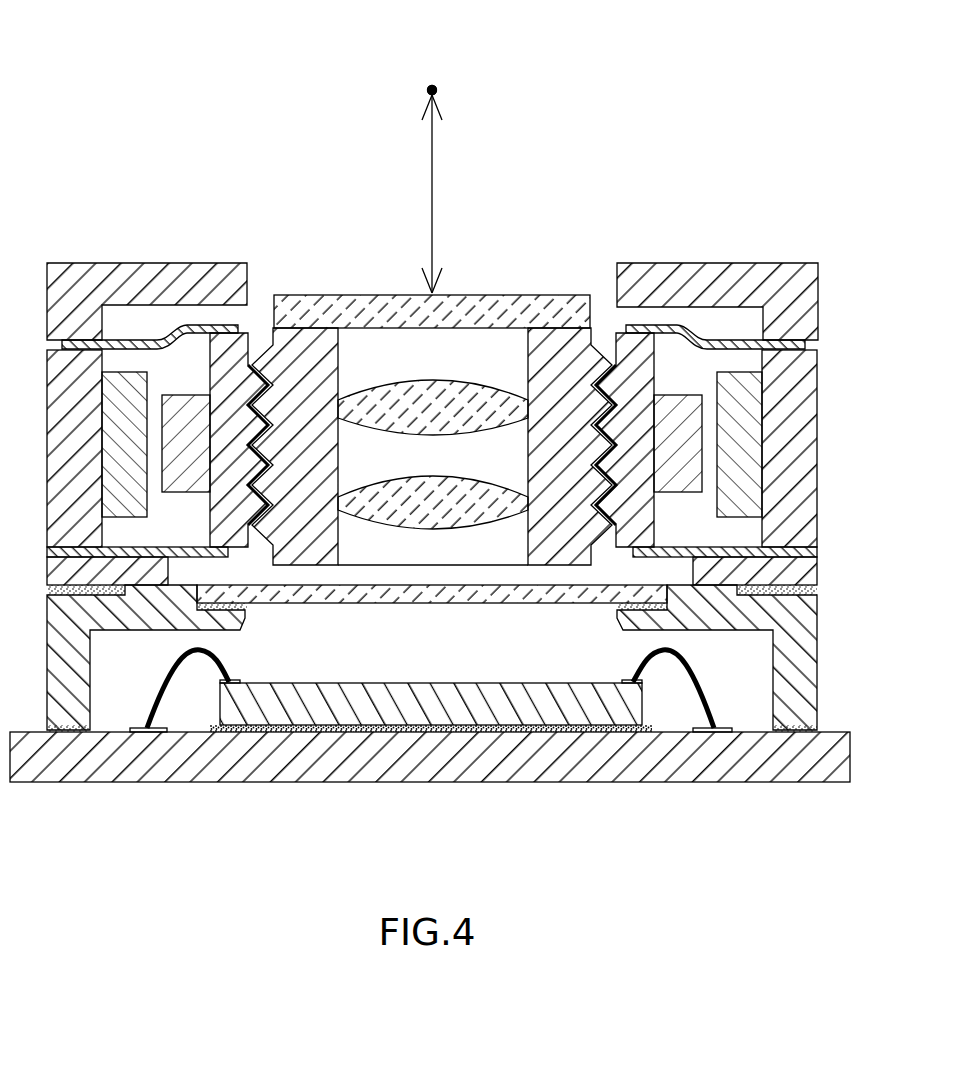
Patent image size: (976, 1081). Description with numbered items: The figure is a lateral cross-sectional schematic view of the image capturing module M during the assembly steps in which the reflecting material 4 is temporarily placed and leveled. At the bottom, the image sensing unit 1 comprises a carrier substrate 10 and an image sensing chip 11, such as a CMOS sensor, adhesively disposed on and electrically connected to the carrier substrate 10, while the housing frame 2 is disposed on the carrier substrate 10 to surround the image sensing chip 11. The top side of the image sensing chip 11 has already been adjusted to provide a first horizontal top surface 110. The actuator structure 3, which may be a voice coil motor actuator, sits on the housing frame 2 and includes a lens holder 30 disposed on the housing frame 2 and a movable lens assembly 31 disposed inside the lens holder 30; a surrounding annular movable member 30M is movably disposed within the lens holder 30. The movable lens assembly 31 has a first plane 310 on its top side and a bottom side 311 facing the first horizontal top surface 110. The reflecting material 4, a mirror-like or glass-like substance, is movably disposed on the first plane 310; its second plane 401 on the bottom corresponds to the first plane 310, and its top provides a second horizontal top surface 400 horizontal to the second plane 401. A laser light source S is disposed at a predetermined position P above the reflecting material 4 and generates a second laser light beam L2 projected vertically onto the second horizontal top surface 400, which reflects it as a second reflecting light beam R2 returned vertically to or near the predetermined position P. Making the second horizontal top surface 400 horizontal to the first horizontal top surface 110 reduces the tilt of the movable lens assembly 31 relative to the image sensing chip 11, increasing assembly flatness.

The image sensing unit 1 is at (393, 834).
The carrier substrate 10 is at (403, 765).
The image sensing chip 11 is at (466, 732).
The first horizontal top surface 110 is at (325, 683).
The housing frame 2 is at (776, 632).
The actuator structure 3 is at (657, 195).
The lens holder 30 is at (432, 395).
The surrounding movable member 30M is at (250, 356).
The movable lens assembly 31 is at (433, 427).
The first plane 310 is at (315, 322).
The bottom side 311 is at (551, 568).
The reflecting material 4 is at (432, 277).
The second horizontal top surface 400 is at (466, 293).
The second plane 401 is at (472, 330).
The image capturing module M is at (58, 31).
The predetermined position P is at (427, 89).
The laser light source S is at (437, 89).
The second reflecting light beam R2 is at (435, 146).
The second laser light beam L2 is at (430, 251).